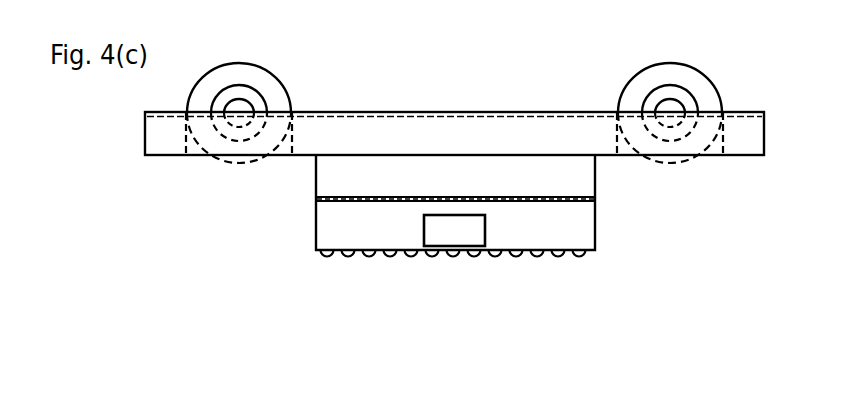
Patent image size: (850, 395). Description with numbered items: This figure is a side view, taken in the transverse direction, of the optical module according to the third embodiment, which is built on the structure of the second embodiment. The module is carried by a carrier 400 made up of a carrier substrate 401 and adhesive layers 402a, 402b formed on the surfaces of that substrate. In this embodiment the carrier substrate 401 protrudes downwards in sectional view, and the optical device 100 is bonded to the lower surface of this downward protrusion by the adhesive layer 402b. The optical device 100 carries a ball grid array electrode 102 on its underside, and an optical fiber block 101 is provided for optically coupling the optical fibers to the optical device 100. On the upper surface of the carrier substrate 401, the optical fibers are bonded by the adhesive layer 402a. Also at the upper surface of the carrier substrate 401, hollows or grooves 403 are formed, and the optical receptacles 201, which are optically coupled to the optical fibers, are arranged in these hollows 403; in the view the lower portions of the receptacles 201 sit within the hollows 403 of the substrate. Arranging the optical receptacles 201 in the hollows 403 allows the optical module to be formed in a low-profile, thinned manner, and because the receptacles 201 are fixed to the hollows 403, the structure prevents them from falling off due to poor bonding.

The carrier 400 is at (137, 112).
The carrier substrate 401 is at (772, 116).
The adhesive layer 402a is at (458, 110).
The adhesive layer 402b is at (316, 199).
The hollows (grooves) 403 is at (719, 160).
The optical receptacles 201 is at (236, 72).
The optical device 100 is at (317, 232).
The optical fiber block 101 is at (487, 229).
The ball grid array (BGA) electrode 102 is at (440, 257).